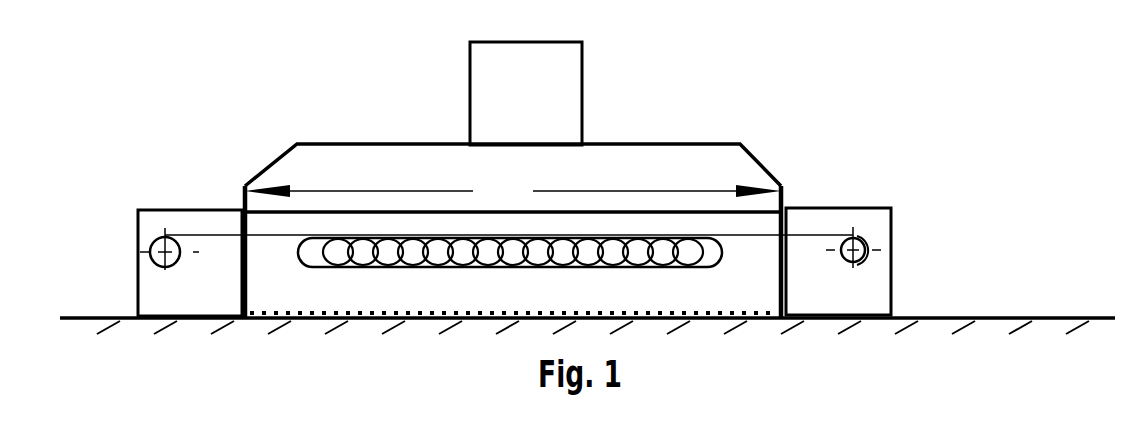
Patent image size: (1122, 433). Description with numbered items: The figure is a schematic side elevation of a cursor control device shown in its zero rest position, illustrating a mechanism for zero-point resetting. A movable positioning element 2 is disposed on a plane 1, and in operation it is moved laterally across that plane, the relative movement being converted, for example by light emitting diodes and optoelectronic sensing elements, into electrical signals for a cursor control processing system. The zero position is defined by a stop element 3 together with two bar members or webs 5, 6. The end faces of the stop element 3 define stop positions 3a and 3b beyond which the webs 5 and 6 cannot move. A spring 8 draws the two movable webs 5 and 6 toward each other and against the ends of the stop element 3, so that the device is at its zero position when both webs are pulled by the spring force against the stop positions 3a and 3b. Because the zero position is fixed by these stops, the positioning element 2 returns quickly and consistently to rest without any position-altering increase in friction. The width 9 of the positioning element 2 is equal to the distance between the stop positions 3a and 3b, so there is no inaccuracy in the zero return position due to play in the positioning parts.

The plane 1 is at (1057, 318).
The positioning element 2 is at (553, 160).
The stop element 3 is at (363, 292).
The stop position 3a is at (243, 225).
The stop position 3b is at (783, 223).
The web 5 is at (163, 285).
The web 6 is at (870, 213).
The spring 8 is at (450, 238).
The width 9 is at (513, 186).